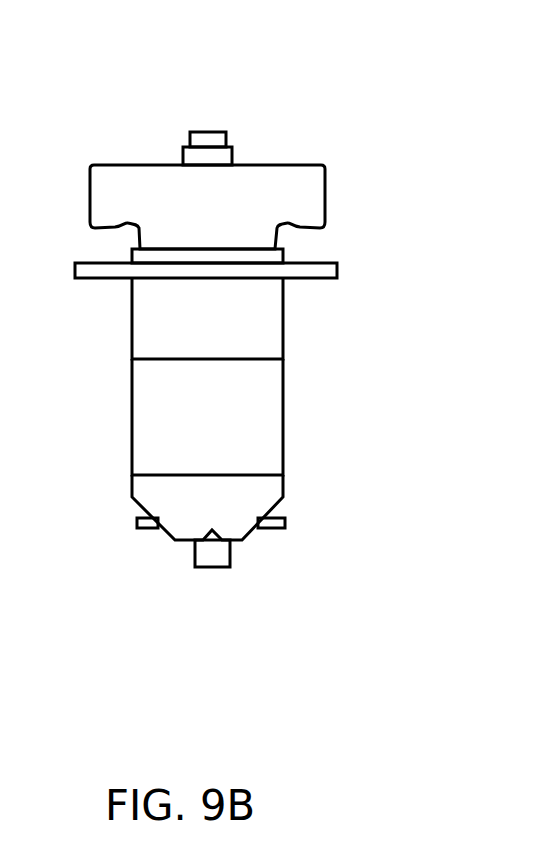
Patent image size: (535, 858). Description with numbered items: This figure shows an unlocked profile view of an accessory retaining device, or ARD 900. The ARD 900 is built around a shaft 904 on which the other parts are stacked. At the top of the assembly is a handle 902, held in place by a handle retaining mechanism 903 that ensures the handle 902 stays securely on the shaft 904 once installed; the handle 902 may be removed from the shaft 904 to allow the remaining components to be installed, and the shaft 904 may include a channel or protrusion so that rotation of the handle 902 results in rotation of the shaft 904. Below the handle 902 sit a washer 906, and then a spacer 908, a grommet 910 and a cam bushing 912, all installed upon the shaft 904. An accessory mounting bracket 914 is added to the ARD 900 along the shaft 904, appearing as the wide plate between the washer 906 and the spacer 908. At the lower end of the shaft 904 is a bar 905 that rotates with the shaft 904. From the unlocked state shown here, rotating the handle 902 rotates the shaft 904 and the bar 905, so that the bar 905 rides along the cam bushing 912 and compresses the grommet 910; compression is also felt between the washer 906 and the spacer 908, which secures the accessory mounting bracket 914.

The accessory retaining device 900 is at (186, 50).
The handle 902 is at (165, 162).
The handle retaining mechanism 903 is at (232, 153).
The shaft 904 is at (192, 568).
The bar 905 is at (135, 522).
The washer 906 is at (130, 250).
The spacer 908 is at (130, 318).
The grommet 910 is at (130, 416).
The cam bushing 912 is at (130, 485).
The accessory mounting bracket 914 is at (337, 270).